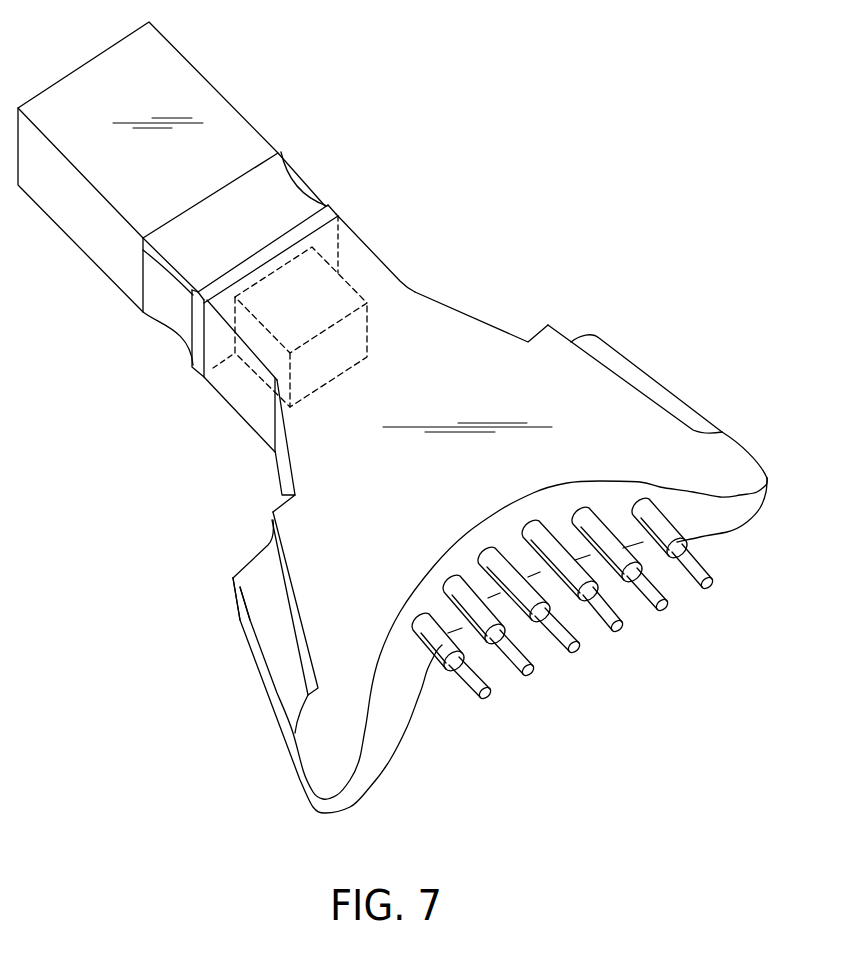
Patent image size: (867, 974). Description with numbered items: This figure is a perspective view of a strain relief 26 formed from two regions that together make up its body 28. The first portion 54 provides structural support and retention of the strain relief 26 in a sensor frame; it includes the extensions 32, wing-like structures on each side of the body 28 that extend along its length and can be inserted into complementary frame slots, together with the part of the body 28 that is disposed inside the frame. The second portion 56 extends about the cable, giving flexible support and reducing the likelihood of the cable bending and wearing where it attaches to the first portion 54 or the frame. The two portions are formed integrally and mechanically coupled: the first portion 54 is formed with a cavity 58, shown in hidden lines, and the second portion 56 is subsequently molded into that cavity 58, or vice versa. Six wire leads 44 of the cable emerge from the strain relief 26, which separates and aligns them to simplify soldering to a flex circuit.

The strain relief 26 is at (510, 195).
The body 28 is at (387, 258).
The extensions 32 is at (642, 382).
The wire leads 44 is at (717, 583).
The first portion 54 is at (478, 317).
The second portion 56 is at (224, 82).
The cavity 58 is at (351, 283).